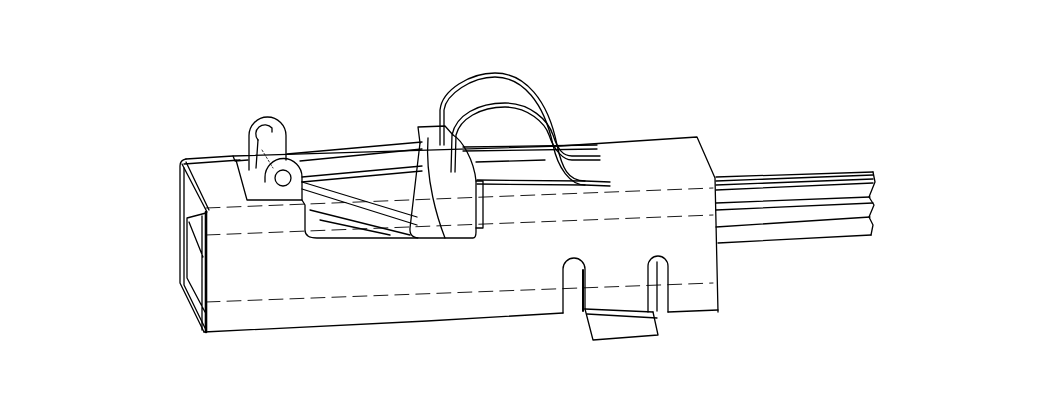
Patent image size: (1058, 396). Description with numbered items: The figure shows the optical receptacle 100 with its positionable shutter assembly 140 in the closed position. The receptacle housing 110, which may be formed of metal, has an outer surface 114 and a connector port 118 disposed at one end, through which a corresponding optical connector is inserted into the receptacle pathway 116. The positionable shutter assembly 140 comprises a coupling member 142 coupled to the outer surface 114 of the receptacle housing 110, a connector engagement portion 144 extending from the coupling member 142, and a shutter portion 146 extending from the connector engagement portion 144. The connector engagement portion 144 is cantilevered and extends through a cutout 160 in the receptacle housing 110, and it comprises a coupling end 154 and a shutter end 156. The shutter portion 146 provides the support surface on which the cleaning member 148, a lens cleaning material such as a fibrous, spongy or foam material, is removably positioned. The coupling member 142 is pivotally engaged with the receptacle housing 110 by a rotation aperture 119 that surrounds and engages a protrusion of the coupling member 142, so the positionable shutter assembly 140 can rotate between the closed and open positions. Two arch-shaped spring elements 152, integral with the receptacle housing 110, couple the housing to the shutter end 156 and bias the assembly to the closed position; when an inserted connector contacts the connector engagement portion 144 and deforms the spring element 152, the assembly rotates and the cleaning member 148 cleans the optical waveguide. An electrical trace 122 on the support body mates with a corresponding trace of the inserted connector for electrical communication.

The optical receptacle 100 is at (127, 150).
The receptacle housing 110 is at (661, 124).
The outer surface 114 is at (250, 290).
The receptacle pathway 116 is at (178, 215).
The connector port 118 is at (180, 200).
The rotation aperture 119 is at (283, 192).
The electrical trace 122 is at (360, 237).
The positionable shutter assembly 140 is at (341, 136).
The coupling member 142 is at (268, 132).
The connector engagement portion 144 is at (337, 222).
The shutter portion 146 is at (447, 238).
The cleaning member 148 is at (485, 221).
The spring element 152 is at (490, 75).
The coupling end 154 is at (236, 140).
The shutter end 156 is at (416, 112).
The cutout 160 is at (345, 232).